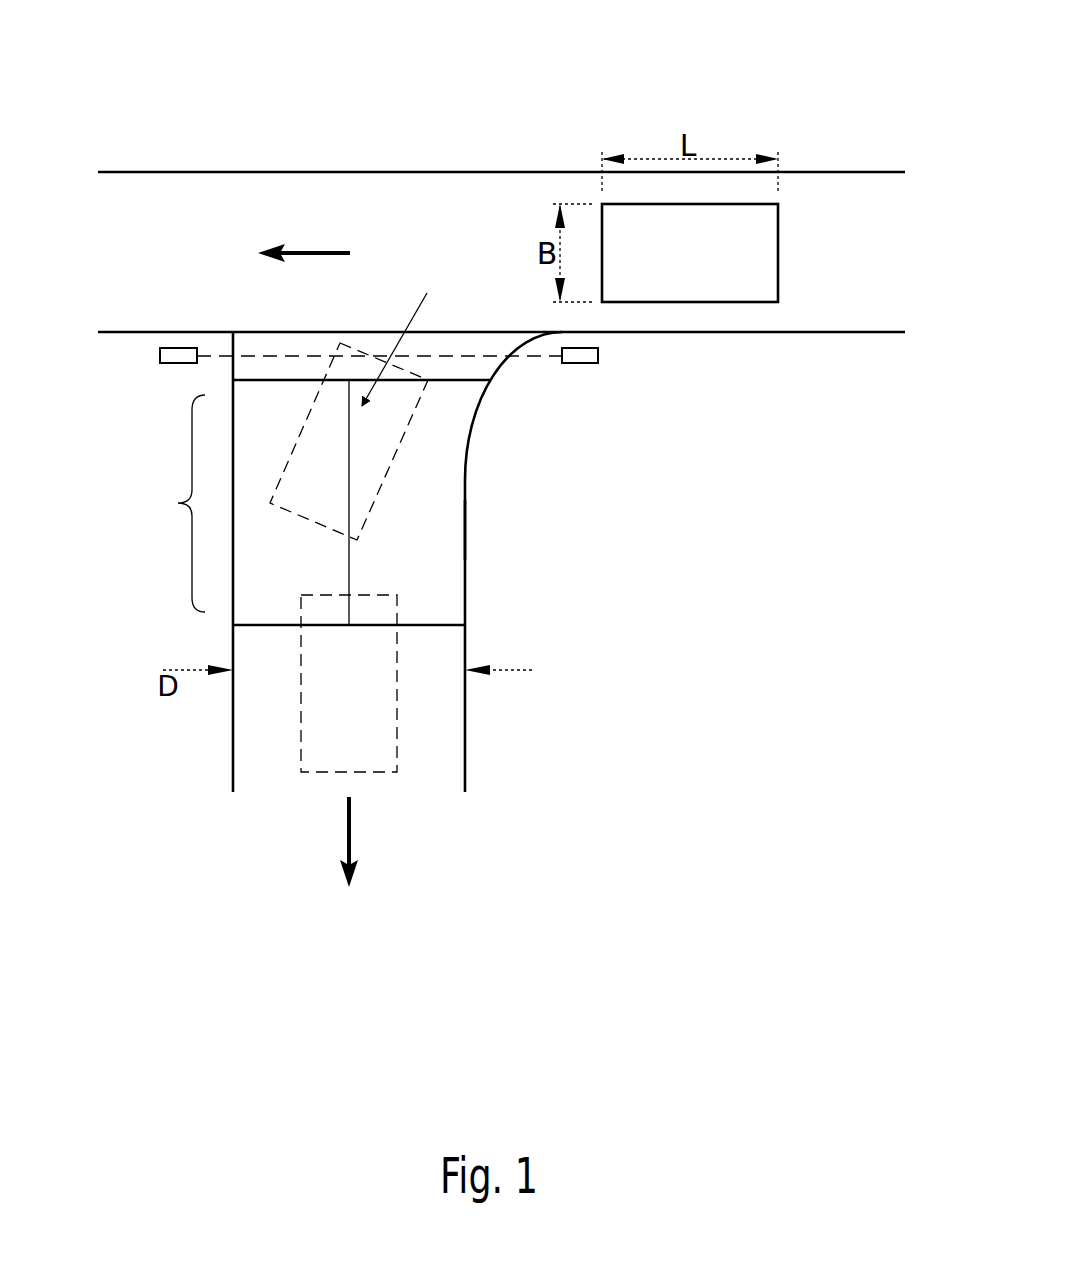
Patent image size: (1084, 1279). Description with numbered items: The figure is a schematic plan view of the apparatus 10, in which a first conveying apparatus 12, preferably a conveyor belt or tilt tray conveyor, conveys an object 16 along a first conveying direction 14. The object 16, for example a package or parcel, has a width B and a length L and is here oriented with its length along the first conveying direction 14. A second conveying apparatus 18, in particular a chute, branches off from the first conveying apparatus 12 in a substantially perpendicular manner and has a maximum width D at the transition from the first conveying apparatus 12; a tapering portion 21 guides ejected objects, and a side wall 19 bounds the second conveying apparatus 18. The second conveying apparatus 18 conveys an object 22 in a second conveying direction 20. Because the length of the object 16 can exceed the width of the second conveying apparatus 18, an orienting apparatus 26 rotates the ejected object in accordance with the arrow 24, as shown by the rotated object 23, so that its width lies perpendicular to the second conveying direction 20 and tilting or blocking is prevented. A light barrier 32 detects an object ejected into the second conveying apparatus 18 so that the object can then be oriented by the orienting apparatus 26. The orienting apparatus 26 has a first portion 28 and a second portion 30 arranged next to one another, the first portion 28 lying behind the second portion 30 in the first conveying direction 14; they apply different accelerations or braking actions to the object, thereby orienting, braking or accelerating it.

The apparatus 10 is at (516, 109).
The first conveying apparatus 12 is at (440, 190).
The first conveying direction 14 is at (317, 250).
The object 16 is at (778, 272).
The second conveying apparatus 18 is at (546, 522).
The side wall 19 is at (232, 397).
The second conveying direction 20 is at (351, 830).
The tapering portion 21 is at (487, 396).
The object 22 is at (397, 693).
The rotated object 23 is at (412, 422).
The arrow 24 is at (410, 315).
The orienting apparatus 26 is at (170, 503).
The first portion 28 is at (245, 612).
The second portion 30 is at (453, 522).
The light barrier 32 is at (598, 356).